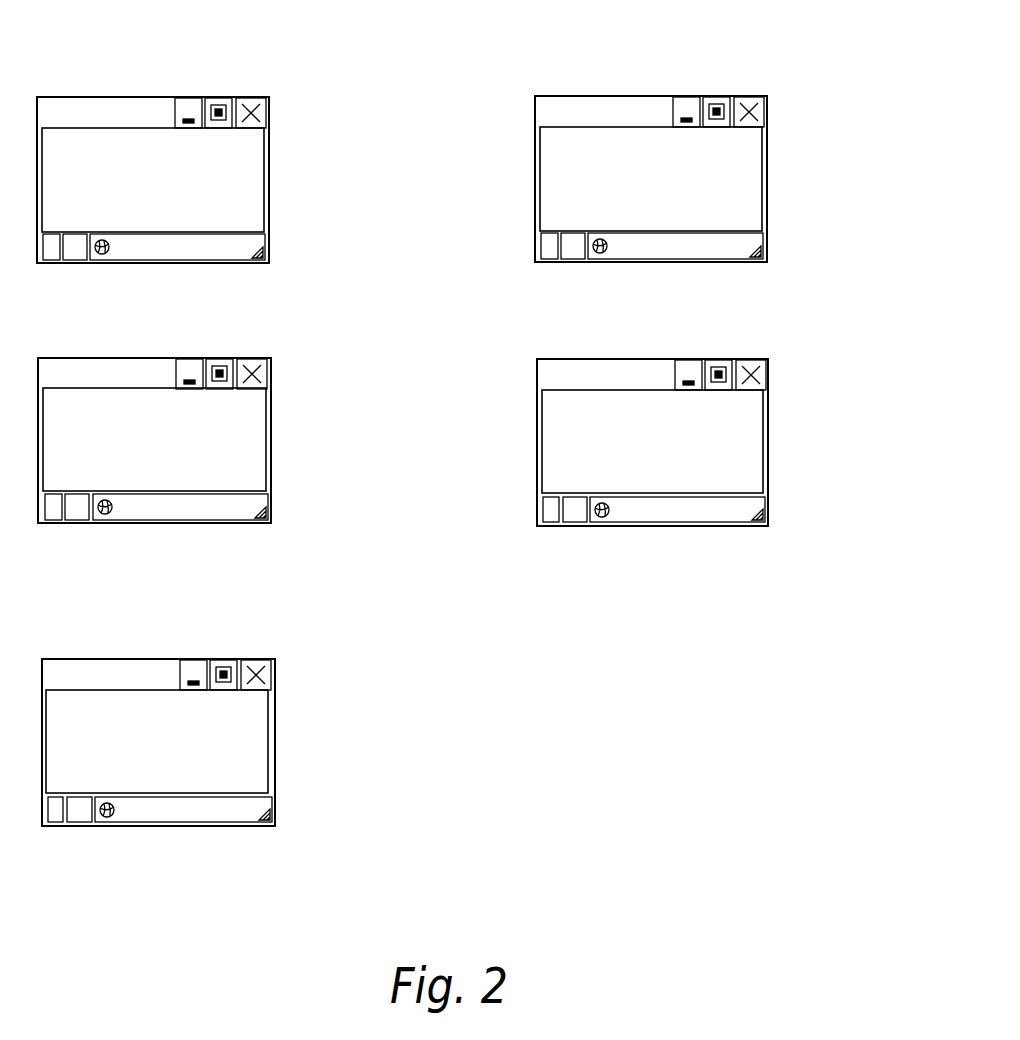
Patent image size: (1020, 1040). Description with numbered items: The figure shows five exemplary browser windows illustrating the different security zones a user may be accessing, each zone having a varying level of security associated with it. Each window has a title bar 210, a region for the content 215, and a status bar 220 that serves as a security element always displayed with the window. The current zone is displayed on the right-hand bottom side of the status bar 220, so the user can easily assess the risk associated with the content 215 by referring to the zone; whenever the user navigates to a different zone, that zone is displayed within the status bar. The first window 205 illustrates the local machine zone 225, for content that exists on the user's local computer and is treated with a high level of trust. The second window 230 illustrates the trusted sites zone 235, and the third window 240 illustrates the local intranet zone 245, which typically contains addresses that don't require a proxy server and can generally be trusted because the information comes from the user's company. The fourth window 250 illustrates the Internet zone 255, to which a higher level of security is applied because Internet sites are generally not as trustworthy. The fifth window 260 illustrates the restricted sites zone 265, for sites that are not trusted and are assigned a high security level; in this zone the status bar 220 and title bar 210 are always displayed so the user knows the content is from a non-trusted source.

The local machine zone window 205 is at (266, 180).
The title bar 210 is at (147, 97).
The content 215 is at (267, 180).
The status bar 220 is at (267, 243).
The local machine zone indicator 225 is at (172, 287).
The trusted sites zone window 230 is at (719, 178).
The trusted sites zone indicator 235 is at (665, 287).
The local intranet zone window 240 is at (218, 440).
The local intranet zone indicator 245 is at (173, 548).
The Internet zone window 250 is at (716, 442).
The Internet zone indicator 255 is at (645, 550).
The restricted zone window 260 is at (221, 742).
The restricted sites zone indicator 265 is at (161, 849).